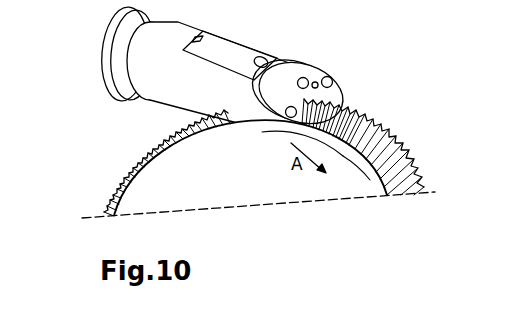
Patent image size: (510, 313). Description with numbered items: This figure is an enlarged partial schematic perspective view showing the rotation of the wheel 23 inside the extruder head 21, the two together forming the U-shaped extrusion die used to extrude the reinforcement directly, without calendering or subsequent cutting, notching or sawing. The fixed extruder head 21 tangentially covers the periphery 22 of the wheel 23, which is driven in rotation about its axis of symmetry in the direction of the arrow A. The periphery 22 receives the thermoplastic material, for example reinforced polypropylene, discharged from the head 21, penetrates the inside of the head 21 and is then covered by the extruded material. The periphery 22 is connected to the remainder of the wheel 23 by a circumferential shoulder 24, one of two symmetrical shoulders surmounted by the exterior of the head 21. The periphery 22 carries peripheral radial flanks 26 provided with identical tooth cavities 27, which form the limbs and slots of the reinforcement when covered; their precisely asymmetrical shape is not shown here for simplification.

The fixed extruder head 21 is at (237, 60).
The wheel periphery 22 is at (124, 180).
The wheel 23 is at (188, 186).
The circumferential shoulder 24 is at (362, 128).
The peripheral radial flank 26 is at (371, 177).
The tooth cavity 27 is at (263, 133).